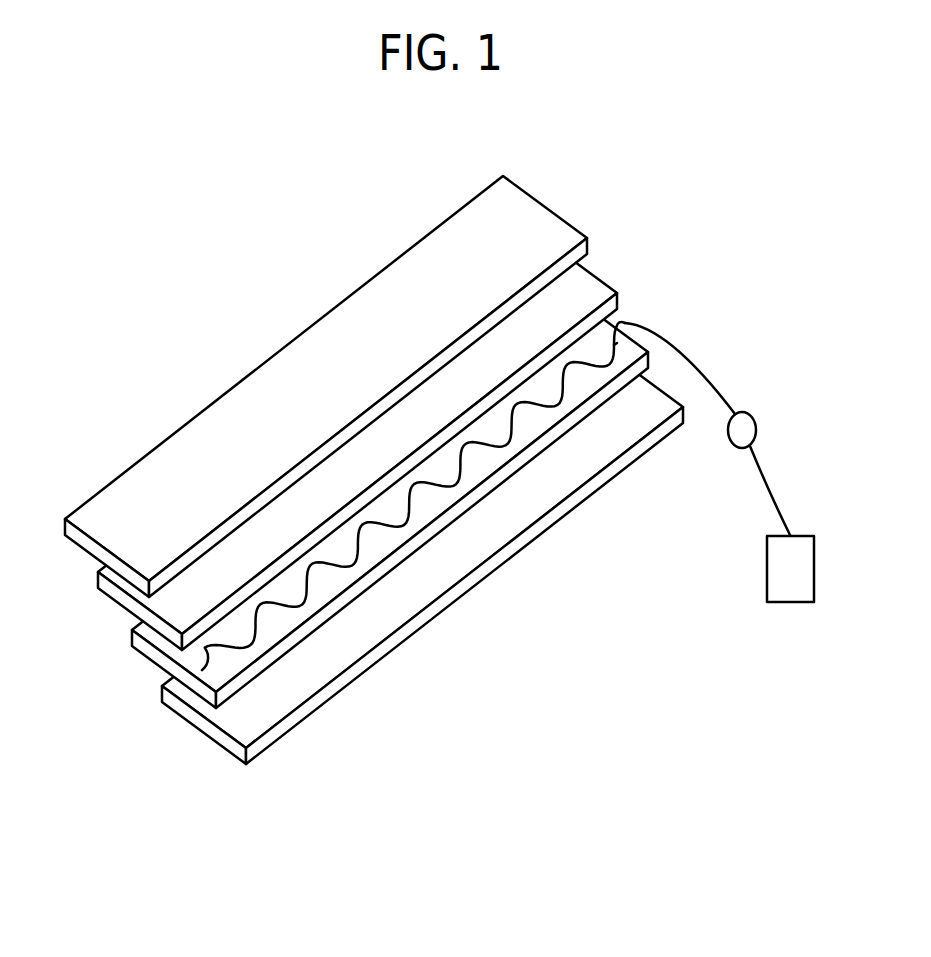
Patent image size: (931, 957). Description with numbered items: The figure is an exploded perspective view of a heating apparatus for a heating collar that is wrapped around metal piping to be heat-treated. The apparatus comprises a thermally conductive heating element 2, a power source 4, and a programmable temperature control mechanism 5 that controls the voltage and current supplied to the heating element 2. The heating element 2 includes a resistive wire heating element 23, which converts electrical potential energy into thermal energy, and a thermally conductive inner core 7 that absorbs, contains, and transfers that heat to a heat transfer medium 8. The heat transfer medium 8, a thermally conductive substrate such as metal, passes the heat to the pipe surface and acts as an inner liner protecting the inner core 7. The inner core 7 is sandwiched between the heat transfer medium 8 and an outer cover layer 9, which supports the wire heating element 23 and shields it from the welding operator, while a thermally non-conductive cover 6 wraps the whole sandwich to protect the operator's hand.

The thermally non-conductive cover 6 is at (108, 512).
The outer cover shell or layer 9 is at (162, 607).
The resistive wire heating element 23 is at (200, 669).
The heat transfer medium 8 is at (244, 722).
The thermally conductive inner core 7 is at (628, 347).
The thermally conductive heating element 2 is at (712, 378).
The programmable temperature control mechanism 5 is at (757, 432).
The power source 4 is at (767, 581).